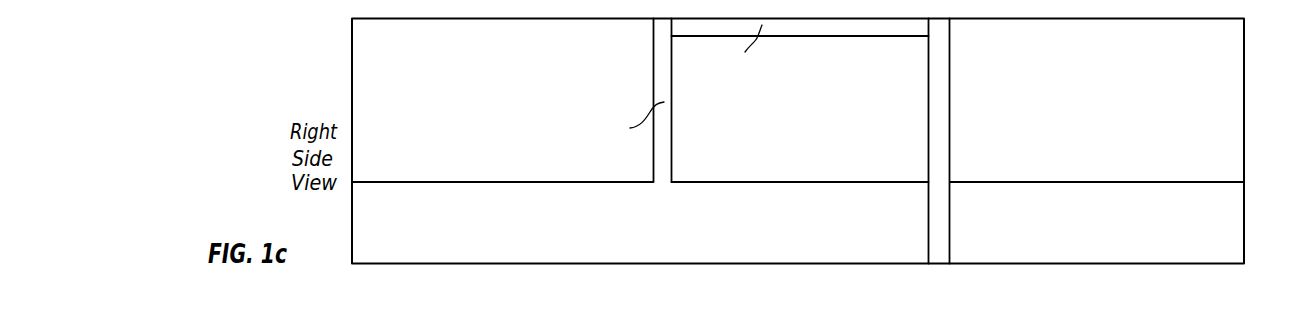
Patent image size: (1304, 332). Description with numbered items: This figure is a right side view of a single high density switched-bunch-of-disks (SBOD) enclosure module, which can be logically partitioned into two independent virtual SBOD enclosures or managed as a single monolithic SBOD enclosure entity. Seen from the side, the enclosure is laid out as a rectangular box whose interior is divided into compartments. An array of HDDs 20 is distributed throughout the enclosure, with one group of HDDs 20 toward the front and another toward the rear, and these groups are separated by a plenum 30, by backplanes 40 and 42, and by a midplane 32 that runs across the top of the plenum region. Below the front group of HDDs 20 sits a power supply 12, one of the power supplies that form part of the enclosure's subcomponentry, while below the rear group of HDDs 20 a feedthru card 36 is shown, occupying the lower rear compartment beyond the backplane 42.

The power supply 12 is at (362, 250).
The HDDs 20 is at (364, 78).
The plenum 30 is at (797, 170).
The midplane 32 is at (800, 51).
The feedthru card 36 is at (1234, 223).
The backplane 40 is at (666, 148).
The backplane 42 is at (938, 149).